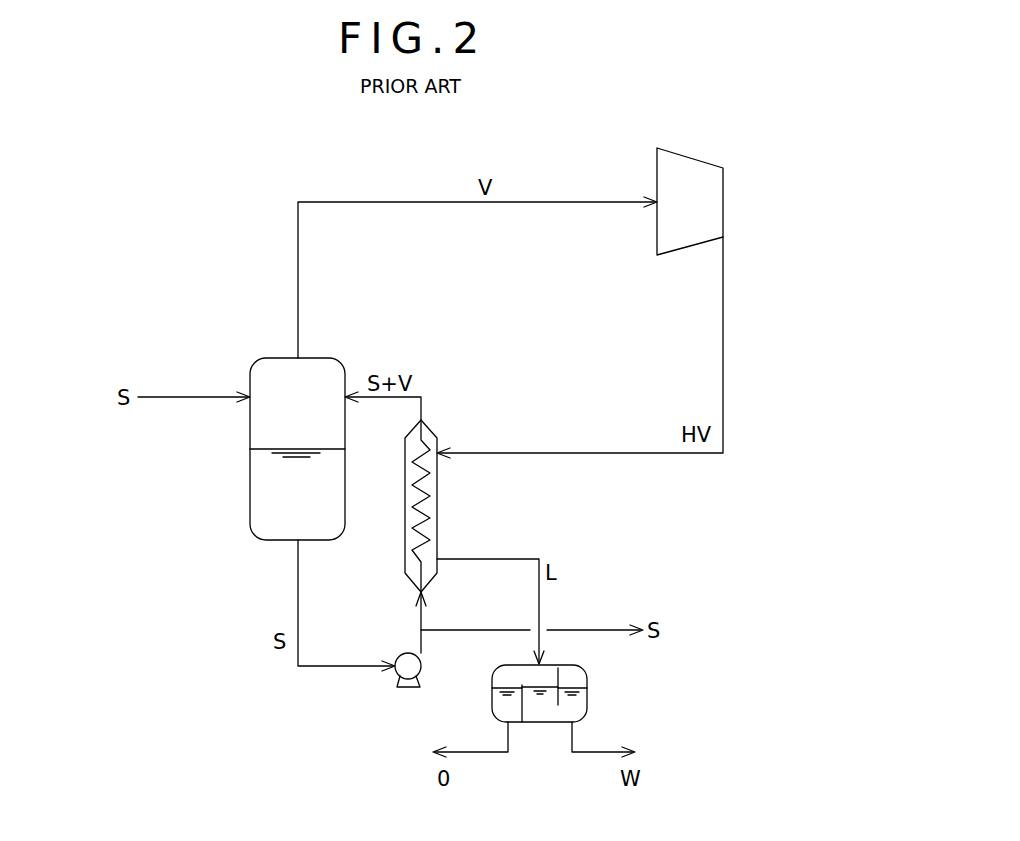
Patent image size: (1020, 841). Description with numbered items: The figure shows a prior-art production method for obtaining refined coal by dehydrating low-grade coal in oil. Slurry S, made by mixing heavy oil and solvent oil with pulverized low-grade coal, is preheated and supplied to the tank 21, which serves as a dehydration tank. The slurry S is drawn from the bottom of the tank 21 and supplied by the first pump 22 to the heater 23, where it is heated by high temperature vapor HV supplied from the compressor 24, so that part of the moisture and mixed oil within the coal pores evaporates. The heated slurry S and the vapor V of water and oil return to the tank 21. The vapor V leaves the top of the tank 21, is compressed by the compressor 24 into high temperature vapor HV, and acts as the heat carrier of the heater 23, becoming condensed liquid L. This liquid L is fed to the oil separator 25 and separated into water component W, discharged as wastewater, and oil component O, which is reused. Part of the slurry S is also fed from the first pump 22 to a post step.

The tank 21 is at (280, 357).
The first pump 22 is at (398, 679).
The heater 23 is at (438, 510).
The compressor 24 is at (698, 157).
The oil separator 25 is at (587, 687).